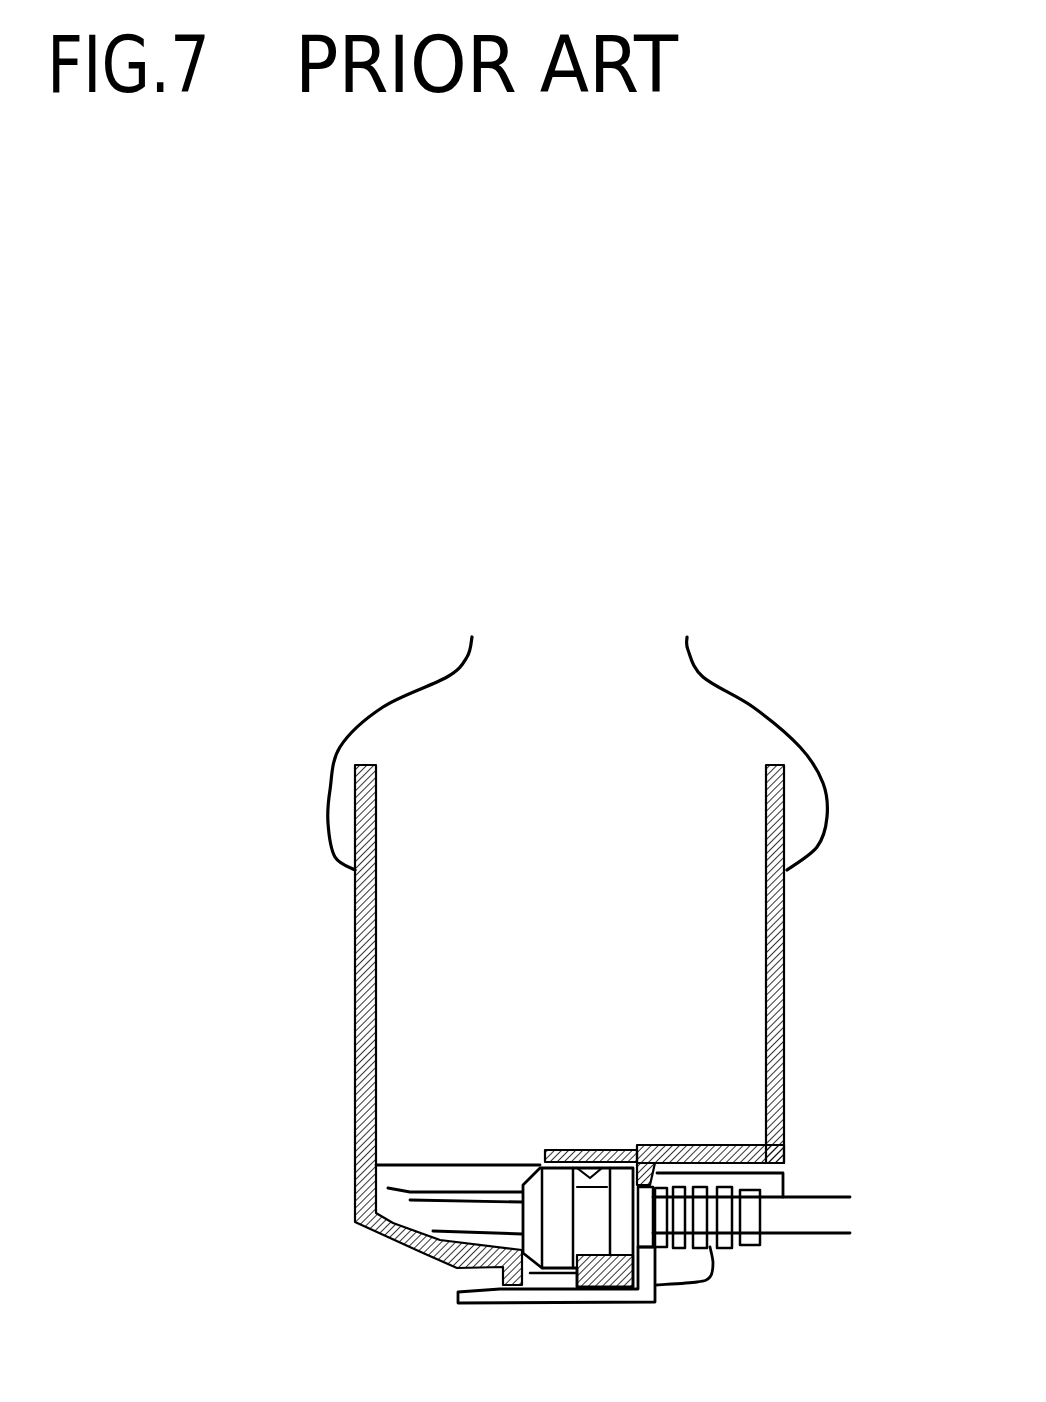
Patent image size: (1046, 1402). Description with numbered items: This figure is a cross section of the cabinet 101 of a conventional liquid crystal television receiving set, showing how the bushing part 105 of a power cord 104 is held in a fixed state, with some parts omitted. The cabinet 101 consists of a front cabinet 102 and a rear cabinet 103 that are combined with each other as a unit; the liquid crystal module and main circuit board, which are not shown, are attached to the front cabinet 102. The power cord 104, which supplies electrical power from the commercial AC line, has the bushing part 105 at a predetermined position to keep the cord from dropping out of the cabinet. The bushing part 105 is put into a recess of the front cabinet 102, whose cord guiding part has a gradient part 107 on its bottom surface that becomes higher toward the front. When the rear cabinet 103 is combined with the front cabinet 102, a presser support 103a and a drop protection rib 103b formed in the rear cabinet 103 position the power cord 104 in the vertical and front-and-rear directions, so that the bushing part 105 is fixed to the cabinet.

The cabinet 101 is at (727, 587).
The front cabinet 102 is at (578, 730).
The rear cabinet 103 is at (569, 937).
The presser support 103a is at (573, 1143).
The drop protection rib 103b is at (671, 1143).
The power cord 104 is at (430, 1190).
The bushing part 105 is at (600, 1145).
The gradient part 107 is at (447, 1243).